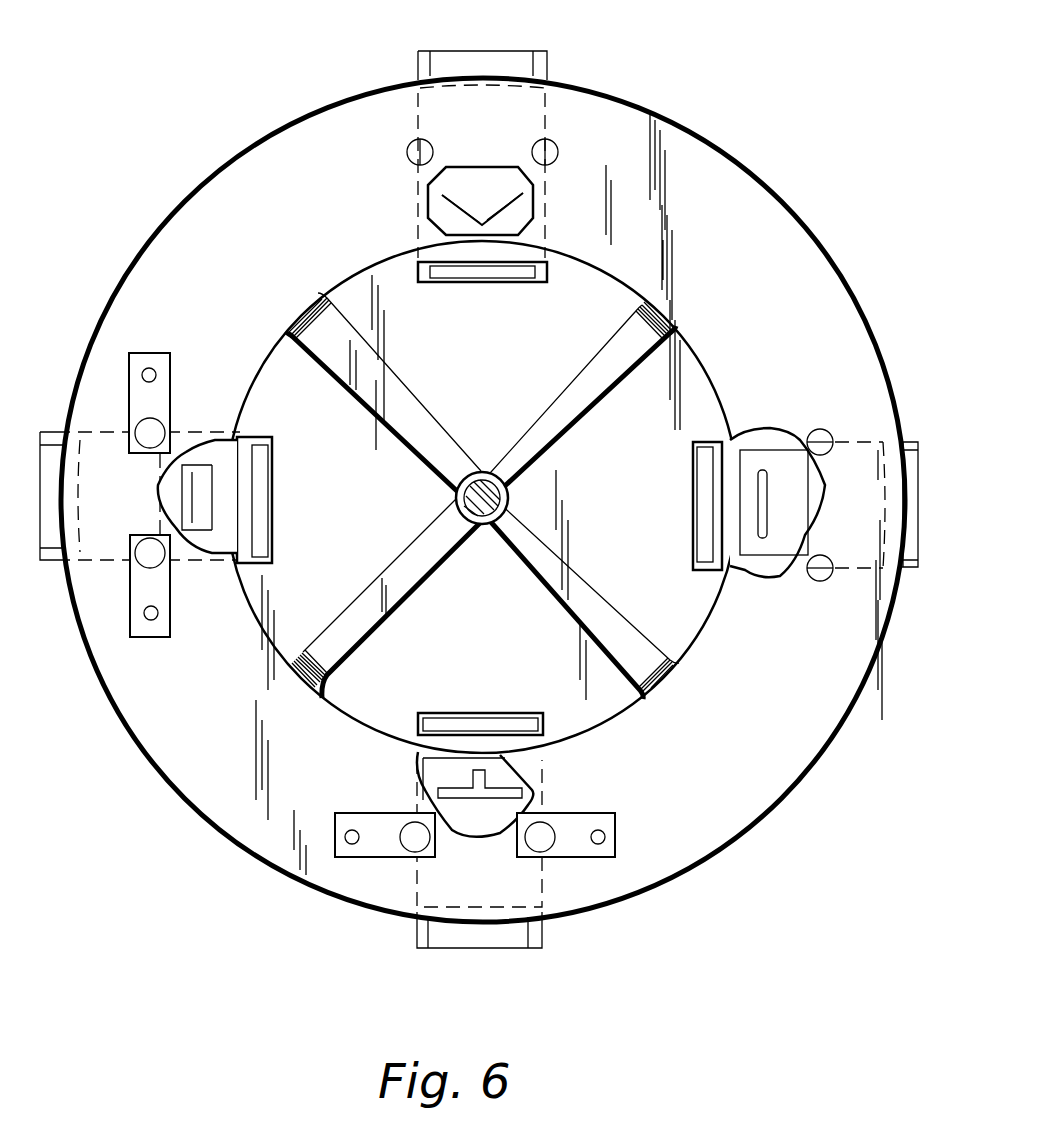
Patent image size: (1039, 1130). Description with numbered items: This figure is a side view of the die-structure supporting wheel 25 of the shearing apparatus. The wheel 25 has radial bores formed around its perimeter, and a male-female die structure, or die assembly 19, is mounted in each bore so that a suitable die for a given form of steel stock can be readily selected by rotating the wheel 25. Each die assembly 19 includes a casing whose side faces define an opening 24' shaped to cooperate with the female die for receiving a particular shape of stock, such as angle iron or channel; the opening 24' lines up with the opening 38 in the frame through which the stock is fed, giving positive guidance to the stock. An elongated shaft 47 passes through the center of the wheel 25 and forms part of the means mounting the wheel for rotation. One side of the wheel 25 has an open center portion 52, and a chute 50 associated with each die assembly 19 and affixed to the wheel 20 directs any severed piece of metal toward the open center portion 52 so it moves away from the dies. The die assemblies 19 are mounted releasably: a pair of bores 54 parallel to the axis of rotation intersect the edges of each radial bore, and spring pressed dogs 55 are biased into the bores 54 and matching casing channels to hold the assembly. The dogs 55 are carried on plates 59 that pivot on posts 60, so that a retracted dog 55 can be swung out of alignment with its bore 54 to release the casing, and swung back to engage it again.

The die assembly 19 is at (650, 54).
The head 20 is at (487, 57).
The opening 24' is at (491, 515).
The wheel 25 is at (176, 208).
The opening 38 is at (468, 170).
The elongated shaft 47 is at (510, 500).
The chute 50 is at (504, 280).
The open center portion 52 is at (562, 452).
The bores 54 is at (407, 152).
The spring pressed dogs 55 is at (160, 433).
The plates 59 is at (160, 597).
The posts 60 is at (152, 618).